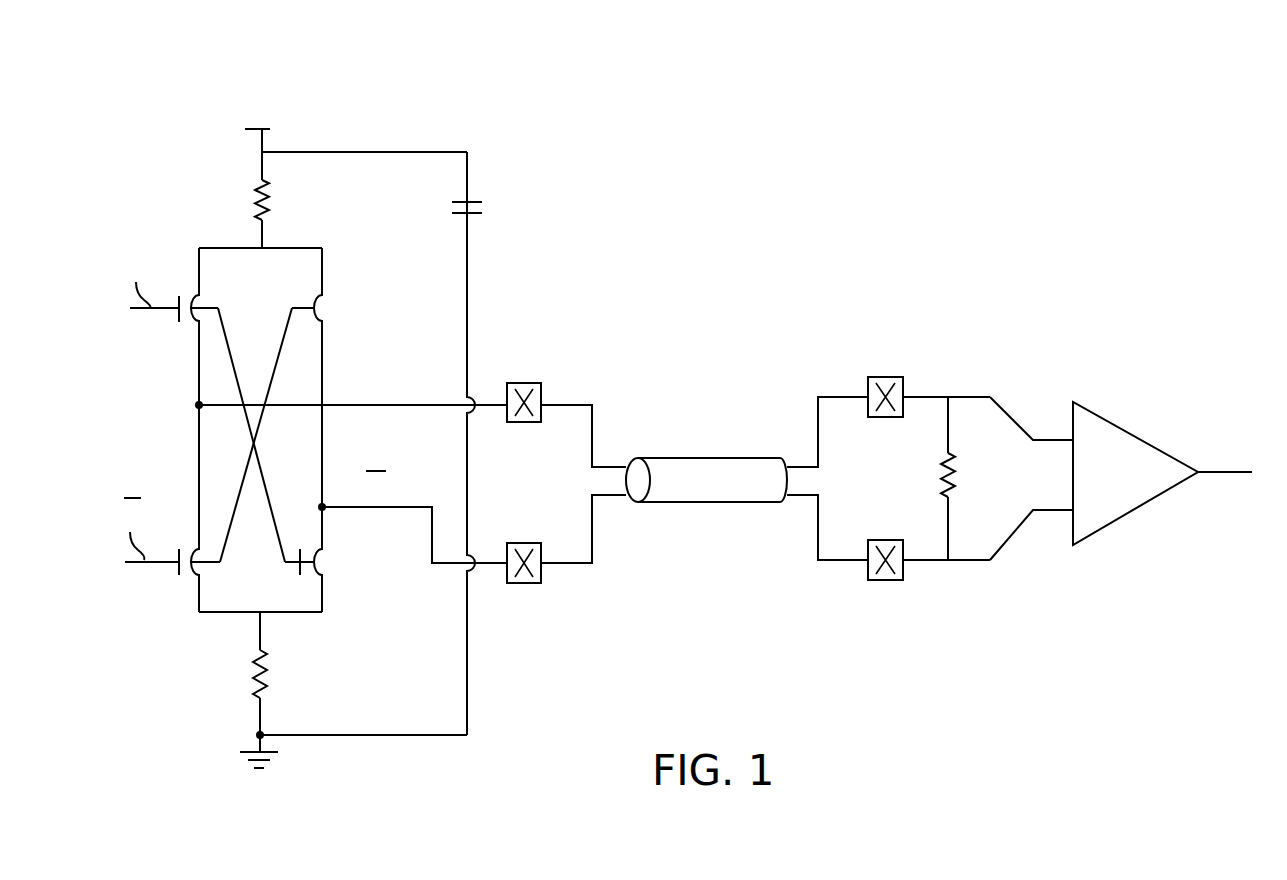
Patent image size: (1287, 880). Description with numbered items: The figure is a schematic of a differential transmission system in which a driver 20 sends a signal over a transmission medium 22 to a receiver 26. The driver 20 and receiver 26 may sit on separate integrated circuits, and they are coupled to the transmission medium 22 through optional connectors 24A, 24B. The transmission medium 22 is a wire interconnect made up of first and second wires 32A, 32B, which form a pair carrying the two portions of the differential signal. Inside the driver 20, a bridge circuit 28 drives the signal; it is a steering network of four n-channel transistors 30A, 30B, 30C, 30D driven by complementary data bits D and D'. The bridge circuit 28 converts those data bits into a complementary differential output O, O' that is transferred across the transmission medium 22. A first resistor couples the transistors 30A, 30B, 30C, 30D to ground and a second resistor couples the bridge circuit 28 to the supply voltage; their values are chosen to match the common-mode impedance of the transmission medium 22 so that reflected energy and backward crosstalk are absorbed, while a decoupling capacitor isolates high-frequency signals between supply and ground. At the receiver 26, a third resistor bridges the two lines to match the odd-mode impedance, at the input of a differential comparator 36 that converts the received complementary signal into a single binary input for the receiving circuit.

The driver 20 is at (557, 97).
The transmission medium 22 is at (715, 455).
The connector 24A is at (523, 379).
The connector 24B is at (888, 373).
The receiver 26 is at (1275, 304).
The bridge circuit 28 is at (340, 250).
The n-channel transistor 30A is at (190, 325).
The n-channel transistor 30B is at (190, 578).
The n-channel transistor 30C is at (324, 304).
The n-channel transistor 30D is at (324, 558).
The first wire 32A is at (616, 463).
The second wire 32B is at (612, 500).
The differential comparator 36 is at (1137, 435).